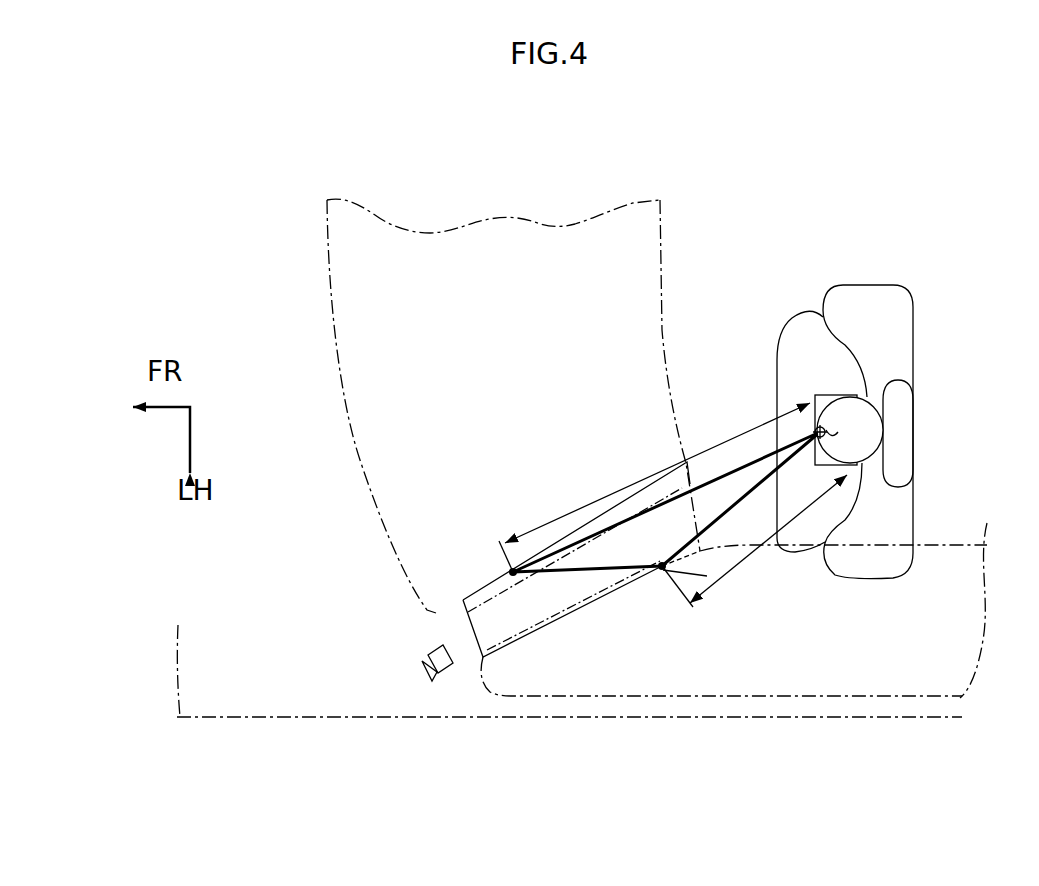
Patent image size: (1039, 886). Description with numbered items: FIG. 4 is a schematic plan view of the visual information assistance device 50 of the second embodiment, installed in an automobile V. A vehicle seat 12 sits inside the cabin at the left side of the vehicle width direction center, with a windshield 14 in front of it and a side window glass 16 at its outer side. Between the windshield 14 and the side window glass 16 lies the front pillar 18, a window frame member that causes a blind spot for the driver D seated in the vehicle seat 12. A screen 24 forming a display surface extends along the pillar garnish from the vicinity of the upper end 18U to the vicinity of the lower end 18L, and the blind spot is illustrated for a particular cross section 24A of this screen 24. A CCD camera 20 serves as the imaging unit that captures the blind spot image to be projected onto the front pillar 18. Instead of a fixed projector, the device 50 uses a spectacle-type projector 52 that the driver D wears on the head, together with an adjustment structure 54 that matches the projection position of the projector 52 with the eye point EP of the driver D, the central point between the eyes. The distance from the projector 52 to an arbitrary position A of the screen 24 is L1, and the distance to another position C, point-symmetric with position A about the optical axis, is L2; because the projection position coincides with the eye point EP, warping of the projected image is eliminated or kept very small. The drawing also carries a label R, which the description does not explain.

The vehicle seat 12 is at (930, 353).
The windshield 14 is at (613, 230).
The side window glass 16 is at (860, 668).
The front pillar 18 is at (487, 592).
The upper end of front pillar 18U is at (687, 462).
The lower end of front pillar 18L is at (427, 608).
The CCD camera 20 is at (432, 643).
The screen 24 is at (463, 620).
The cross section of the screen 24A is at (577, 572).
The visual information assistance device 50 is at (790, 230).
The projector 52 is at (827, 390).
The adjustment structure 54 is at (797, 380).
The position A of the screen A is at (513, 576).
The position C of the screen C is at (662, 570).
The driver D is at (838, 378).
The region R is at (677, 220).
The eye point EP is at (843, 434).
The automobile V is at (750, 746).
The distance L1 is at (643, 478).
The distance L2 is at (747, 557).